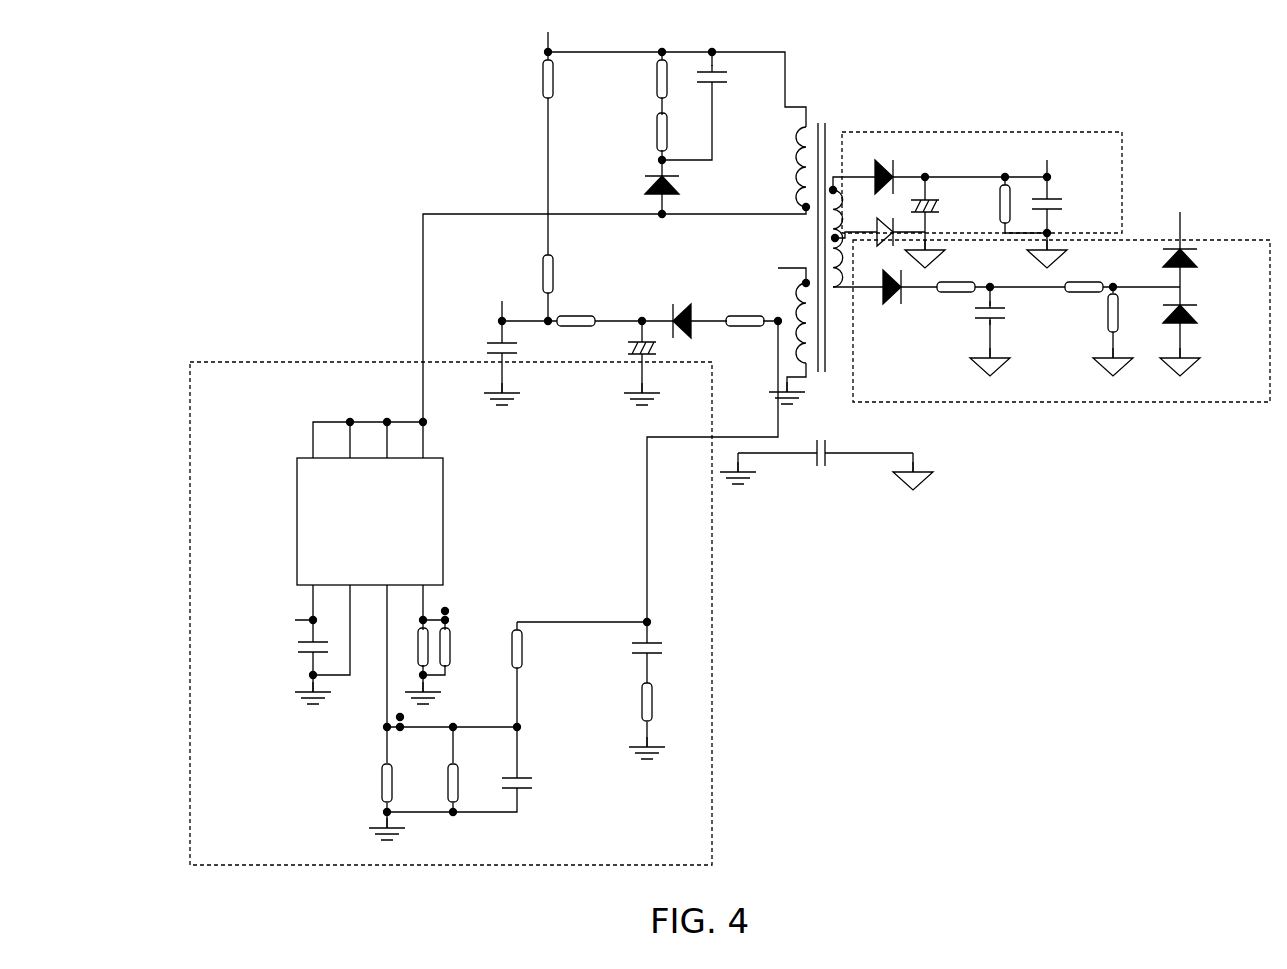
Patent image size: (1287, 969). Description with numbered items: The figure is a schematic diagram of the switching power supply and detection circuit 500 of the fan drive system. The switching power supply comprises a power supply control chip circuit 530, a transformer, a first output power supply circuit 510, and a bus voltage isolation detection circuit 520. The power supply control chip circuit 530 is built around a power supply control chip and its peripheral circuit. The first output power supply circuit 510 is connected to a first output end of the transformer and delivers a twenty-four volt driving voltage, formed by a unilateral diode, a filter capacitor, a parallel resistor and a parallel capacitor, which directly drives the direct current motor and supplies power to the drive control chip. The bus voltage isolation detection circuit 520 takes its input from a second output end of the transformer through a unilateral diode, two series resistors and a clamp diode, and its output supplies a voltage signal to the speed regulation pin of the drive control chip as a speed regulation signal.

The power supply circuit 500 is at (296, 93).
The first output power supply circuit 510 is at (952, 130).
The bus voltage isolation detection circuit 520 is at (1062, 402).
The power supply control chip circuit 530 is at (283, 363).